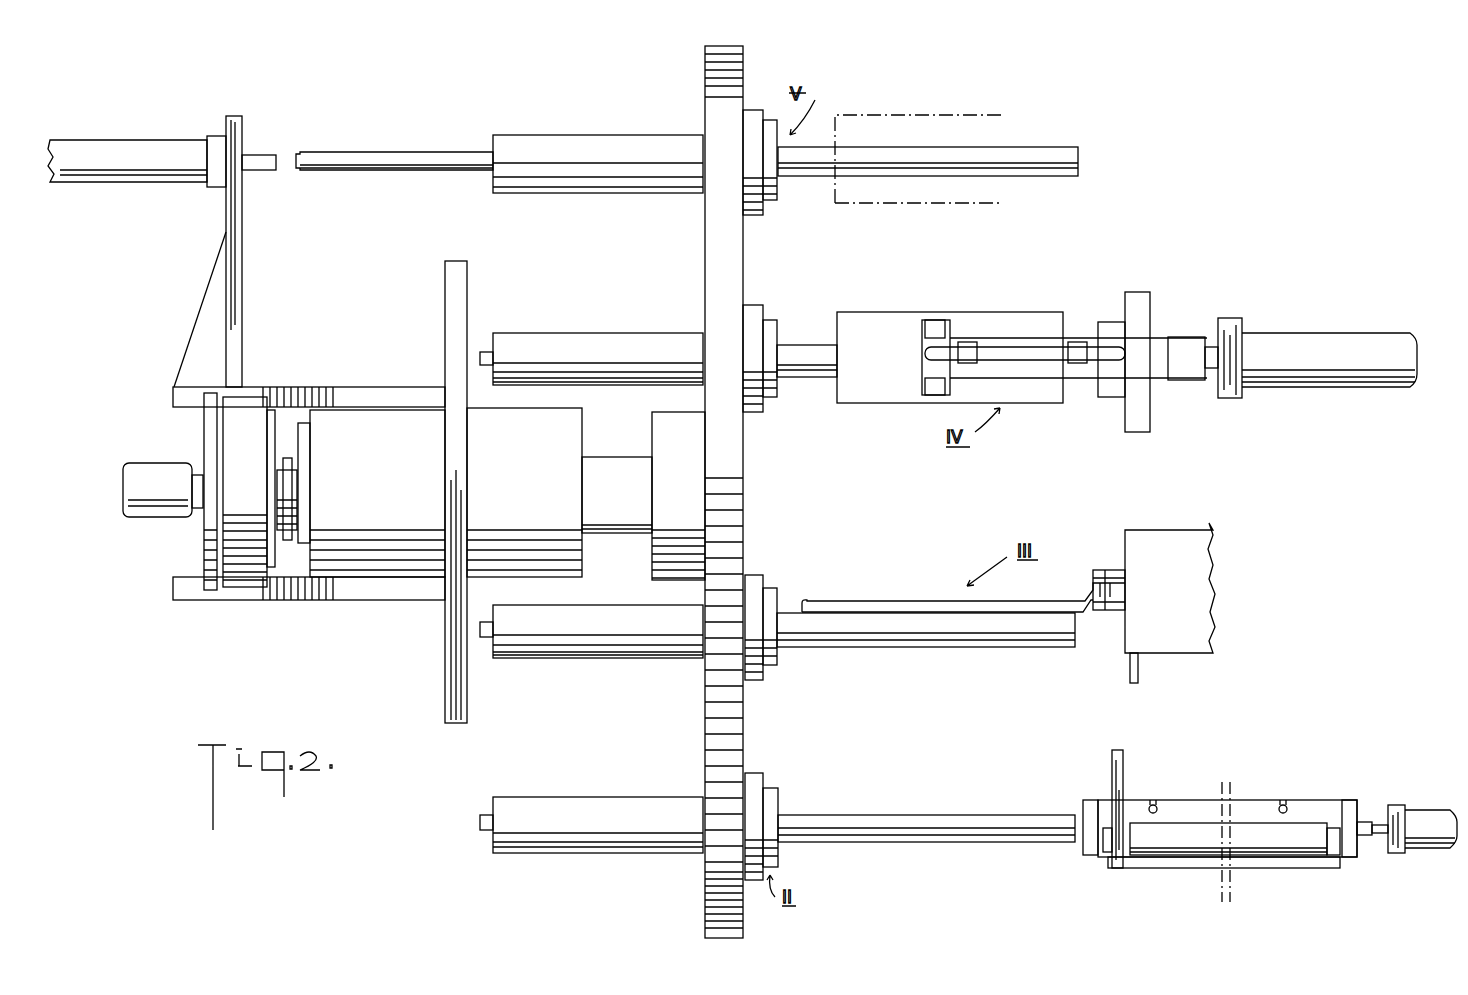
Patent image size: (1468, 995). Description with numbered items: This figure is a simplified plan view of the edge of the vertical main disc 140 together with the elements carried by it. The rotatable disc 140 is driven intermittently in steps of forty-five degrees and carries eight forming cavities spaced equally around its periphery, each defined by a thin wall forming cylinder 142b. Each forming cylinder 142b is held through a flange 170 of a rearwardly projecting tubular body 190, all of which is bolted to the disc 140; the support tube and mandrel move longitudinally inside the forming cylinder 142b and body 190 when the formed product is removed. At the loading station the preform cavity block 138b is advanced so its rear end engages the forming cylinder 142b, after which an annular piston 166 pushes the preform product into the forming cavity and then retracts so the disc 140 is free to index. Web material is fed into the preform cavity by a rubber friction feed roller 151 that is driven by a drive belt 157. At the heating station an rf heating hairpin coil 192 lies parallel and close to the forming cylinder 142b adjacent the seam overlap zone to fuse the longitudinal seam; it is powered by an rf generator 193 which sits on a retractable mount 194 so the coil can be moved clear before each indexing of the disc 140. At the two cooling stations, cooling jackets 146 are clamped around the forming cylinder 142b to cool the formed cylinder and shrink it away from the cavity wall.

The rotatable disc 140 is at (712, 72).
The thin wall cylinder 142b is at (918, 152).
The cooling jacket 146 is at (1018, 322).
The flange 170 is at (762, 308).
The rearwardly projecting tubular body 190 is at (522, 183).
The rf heating hairpin coil 192 is at (930, 600).
The rf generator 193 is at (1183, 528).
The retractable mount 194 is at (1125, 665).
The drive belt 157 is at (1115, 765).
The preform cavity block 138b is at (1317, 810).
The feed roller 151 is at (1275, 848).
The piston 166 is at (1365, 836).